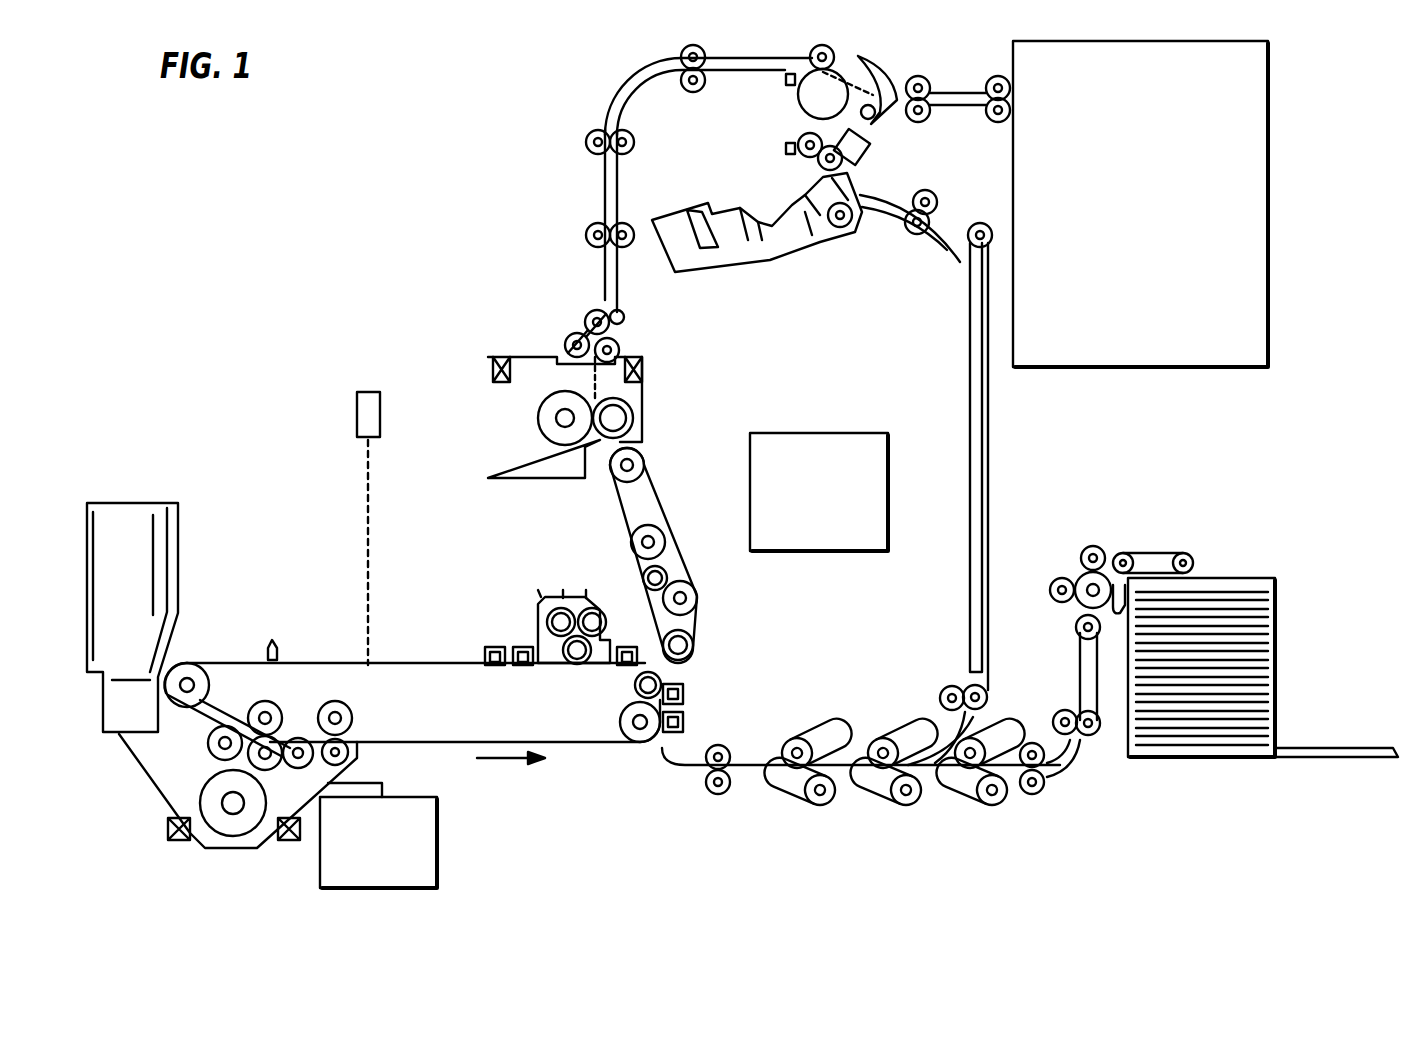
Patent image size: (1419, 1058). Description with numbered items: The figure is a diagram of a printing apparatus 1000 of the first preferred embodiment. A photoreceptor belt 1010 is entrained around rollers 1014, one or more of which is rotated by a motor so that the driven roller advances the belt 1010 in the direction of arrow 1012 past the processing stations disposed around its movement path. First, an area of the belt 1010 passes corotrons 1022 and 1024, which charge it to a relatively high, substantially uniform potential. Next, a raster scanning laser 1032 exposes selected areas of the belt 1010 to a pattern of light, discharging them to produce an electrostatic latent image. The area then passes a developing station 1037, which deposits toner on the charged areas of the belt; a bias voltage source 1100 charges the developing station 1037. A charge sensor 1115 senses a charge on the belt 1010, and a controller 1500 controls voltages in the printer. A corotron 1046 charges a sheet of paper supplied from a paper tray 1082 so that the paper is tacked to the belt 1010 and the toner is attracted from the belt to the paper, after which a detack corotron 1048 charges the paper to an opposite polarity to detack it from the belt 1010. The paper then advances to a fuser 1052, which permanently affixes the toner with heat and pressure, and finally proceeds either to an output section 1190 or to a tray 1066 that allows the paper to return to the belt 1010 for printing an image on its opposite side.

The printing apparatus 1000 is at (822, 843).
The photoreceptor belt 1010 is at (458, 673).
The arrow 1012 is at (495, 763).
The rollers 1014 is at (180, 665).
The corotron 1022 is at (515, 648).
The corotron 1024 is at (485, 647).
The raster scanning laser 1032 is at (378, 405).
The developing station 1037 is at (230, 847).
The corotron 1046 is at (685, 727).
The detack corotron 1048 is at (685, 697).
The fuser 1052 is at (498, 482).
The tray 1066 is at (738, 242).
The paper tray 1082 is at (1173, 760).
The bias voltage source 1100 is at (390, 797).
The charge sensor 1115 is at (270, 637).
The output section 1190 is at (1143, 377).
The controller 1500 is at (812, 432).